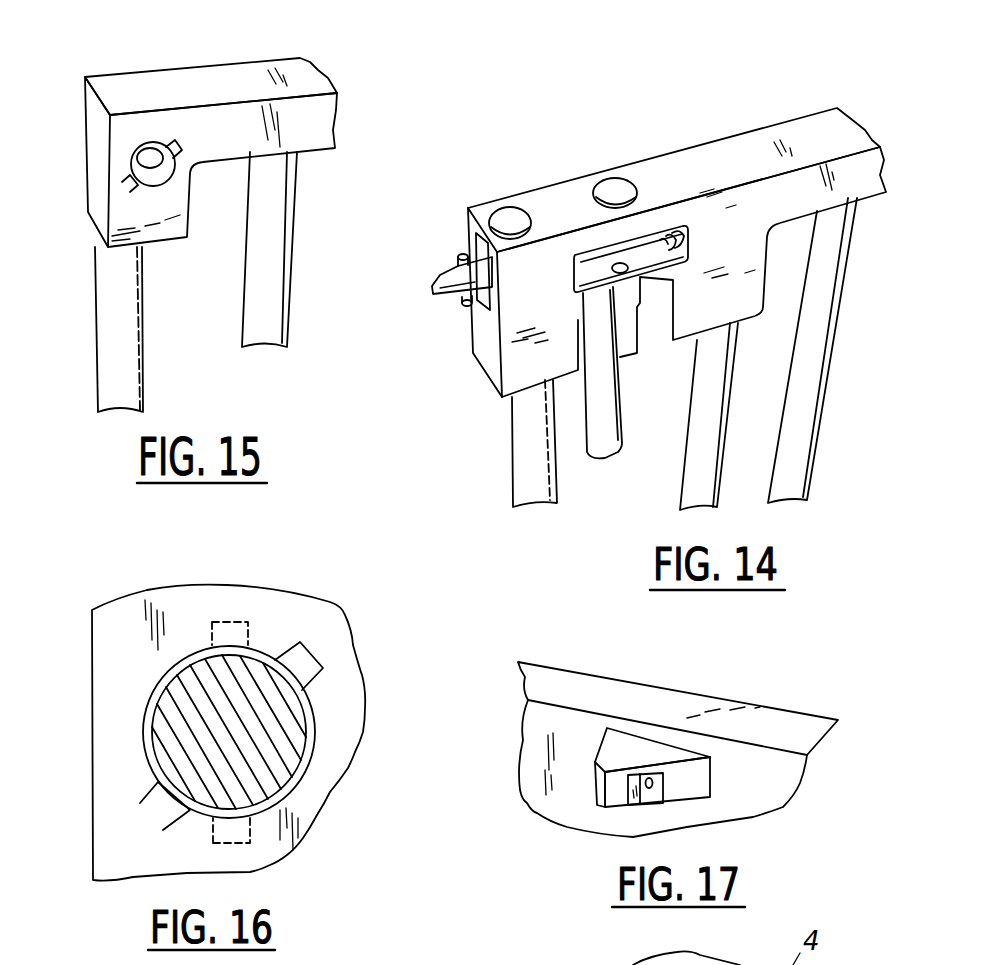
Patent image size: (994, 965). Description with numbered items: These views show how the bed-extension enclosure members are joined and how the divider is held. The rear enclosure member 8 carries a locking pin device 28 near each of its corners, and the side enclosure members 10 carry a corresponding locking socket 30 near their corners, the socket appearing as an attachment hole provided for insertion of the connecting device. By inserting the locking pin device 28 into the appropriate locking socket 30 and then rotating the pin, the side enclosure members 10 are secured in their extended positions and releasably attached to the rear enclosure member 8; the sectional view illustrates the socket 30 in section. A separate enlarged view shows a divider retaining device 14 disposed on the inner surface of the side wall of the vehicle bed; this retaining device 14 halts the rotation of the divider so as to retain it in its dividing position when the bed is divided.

In FIG. 14, the rear enclosure member 8 is at (690, 160).
In FIG. 15, the side enclosure member 10 is at (295, 77).
In FIG. 17, the divider retaining device 14 is at (693, 767).
In FIG. 14, the locking pin device 28 is at (475, 290).
In FIG. 15, the locking socket 30 is at (140, 162).
In FIG. 16, the locking socket 30 is at (280, 720).